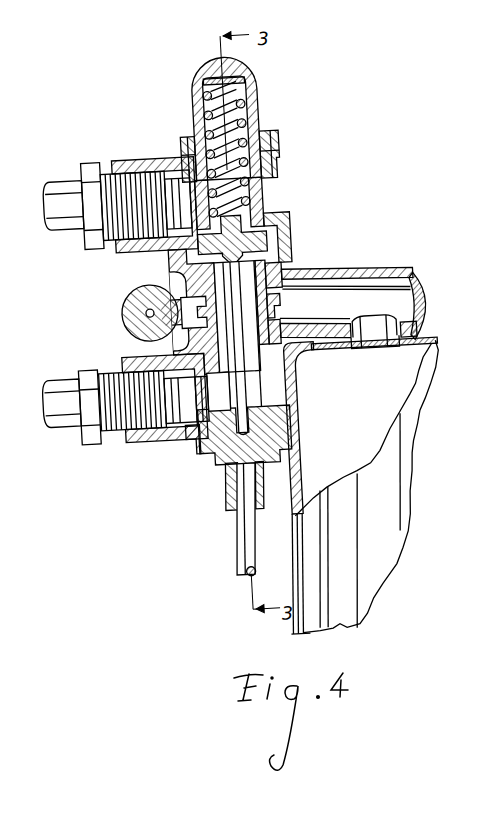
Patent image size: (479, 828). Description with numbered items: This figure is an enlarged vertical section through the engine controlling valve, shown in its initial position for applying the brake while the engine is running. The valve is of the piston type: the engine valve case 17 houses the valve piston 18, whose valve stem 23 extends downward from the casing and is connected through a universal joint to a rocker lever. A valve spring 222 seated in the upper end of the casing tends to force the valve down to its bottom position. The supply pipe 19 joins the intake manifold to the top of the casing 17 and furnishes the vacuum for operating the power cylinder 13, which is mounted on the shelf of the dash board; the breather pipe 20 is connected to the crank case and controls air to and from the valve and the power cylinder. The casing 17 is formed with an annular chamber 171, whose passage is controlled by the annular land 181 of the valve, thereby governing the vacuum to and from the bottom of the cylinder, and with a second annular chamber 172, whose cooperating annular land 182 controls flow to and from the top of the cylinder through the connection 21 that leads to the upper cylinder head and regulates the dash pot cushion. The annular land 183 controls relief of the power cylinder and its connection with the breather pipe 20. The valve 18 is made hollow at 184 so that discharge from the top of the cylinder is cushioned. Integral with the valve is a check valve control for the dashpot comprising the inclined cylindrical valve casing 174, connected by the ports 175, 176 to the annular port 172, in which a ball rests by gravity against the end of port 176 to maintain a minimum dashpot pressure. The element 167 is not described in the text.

The power cylinder 13 is at (407, 409).
The engine valve case 17 is at (276, 158).
The valve piston 18 is at (219, 391).
The supply pipe 19 is at (64, 222).
The breather pipe 20 is at (56, 404).
The connection to upper cylinder head 21 is at (359, 276).
The valve stem 23 is at (218, 534).
The flange 167 is at (277, 369).
The annular chamber 171 is at (263, 222).
The annular chamber 172 is at (173, 281).
The valve casing 174 is at (134, 309).
The port 175 is at (112, 287).
The port 176 is at (118, 321).
The annular land 181 is at (274, 236).
The annular land 182 is at (268, 310).
The annular land 183 is at (288, 268).
The hollow of valve 184 is at (281, 397).
The valve spring 222 is at (258, 108).